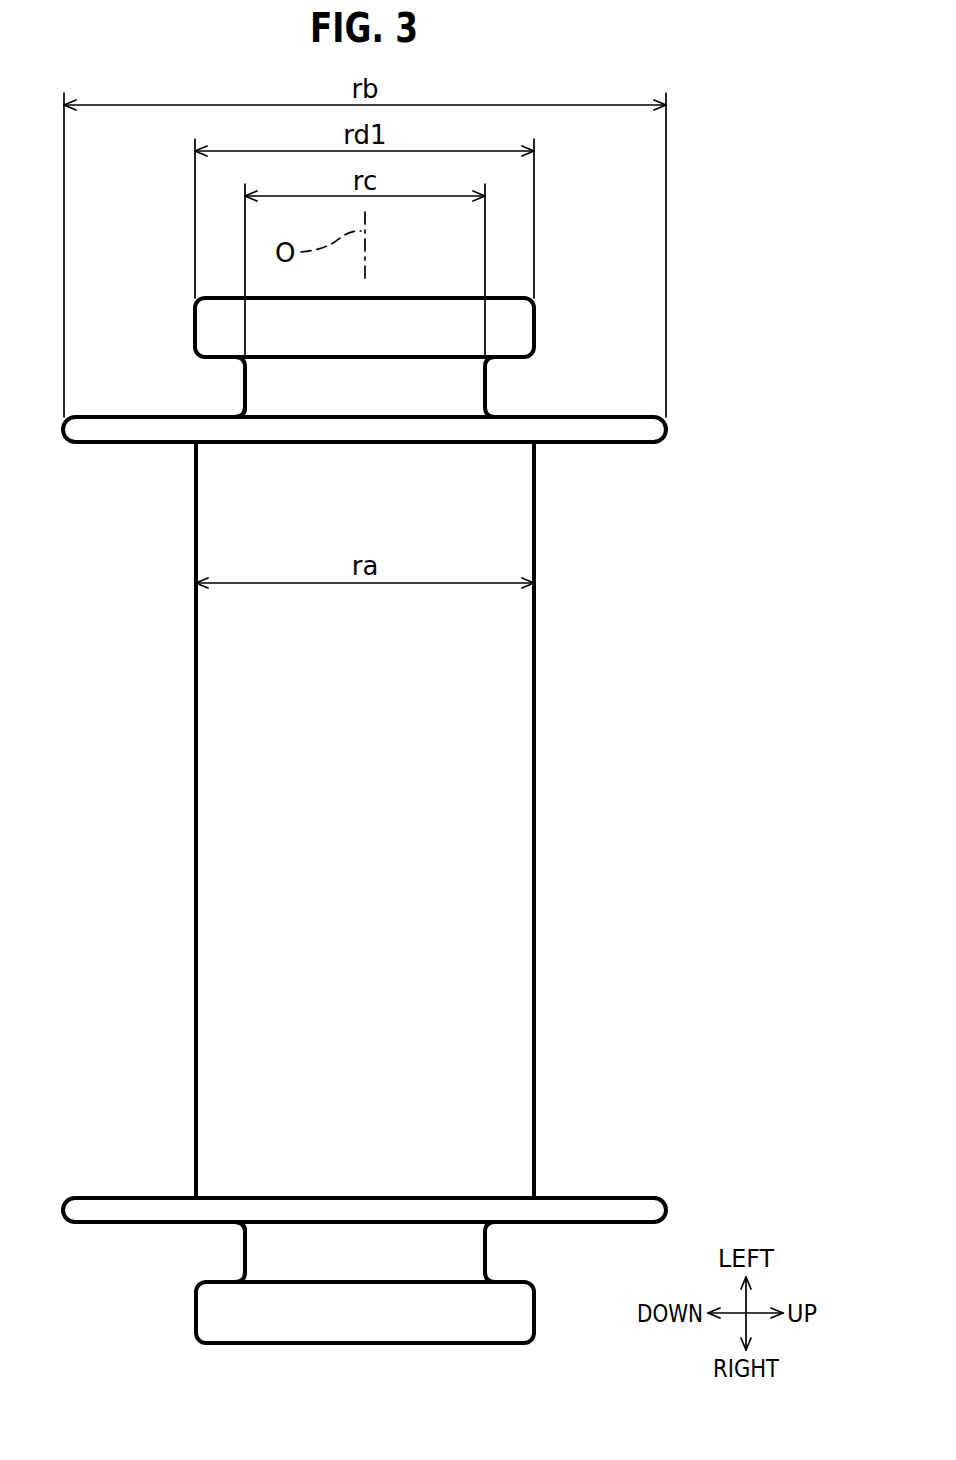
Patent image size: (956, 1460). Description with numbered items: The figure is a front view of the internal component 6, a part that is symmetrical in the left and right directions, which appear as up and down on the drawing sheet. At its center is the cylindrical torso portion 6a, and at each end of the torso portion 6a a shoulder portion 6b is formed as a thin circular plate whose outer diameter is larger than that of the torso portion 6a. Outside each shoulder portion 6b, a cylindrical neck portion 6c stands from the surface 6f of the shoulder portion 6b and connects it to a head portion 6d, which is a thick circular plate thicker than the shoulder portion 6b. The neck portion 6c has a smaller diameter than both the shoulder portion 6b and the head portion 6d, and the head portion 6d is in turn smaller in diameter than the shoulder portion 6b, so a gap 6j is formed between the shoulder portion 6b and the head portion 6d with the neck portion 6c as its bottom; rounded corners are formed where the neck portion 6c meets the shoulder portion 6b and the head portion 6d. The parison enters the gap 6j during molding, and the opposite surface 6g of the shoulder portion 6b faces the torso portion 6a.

The internal component 6 is at (596, 543).
The torso portion 6a is at (524, 737).
The shoulder portion 6b is at (665, 432).
The neck portion 6c is at (478, 386).
The head portion 6d is at (527, 332).
The surface of the shoulder portion 6f is at (110, 416).
The outer surface of flange 6g is at (108, 444).
The gap 6j is at (204, 393).